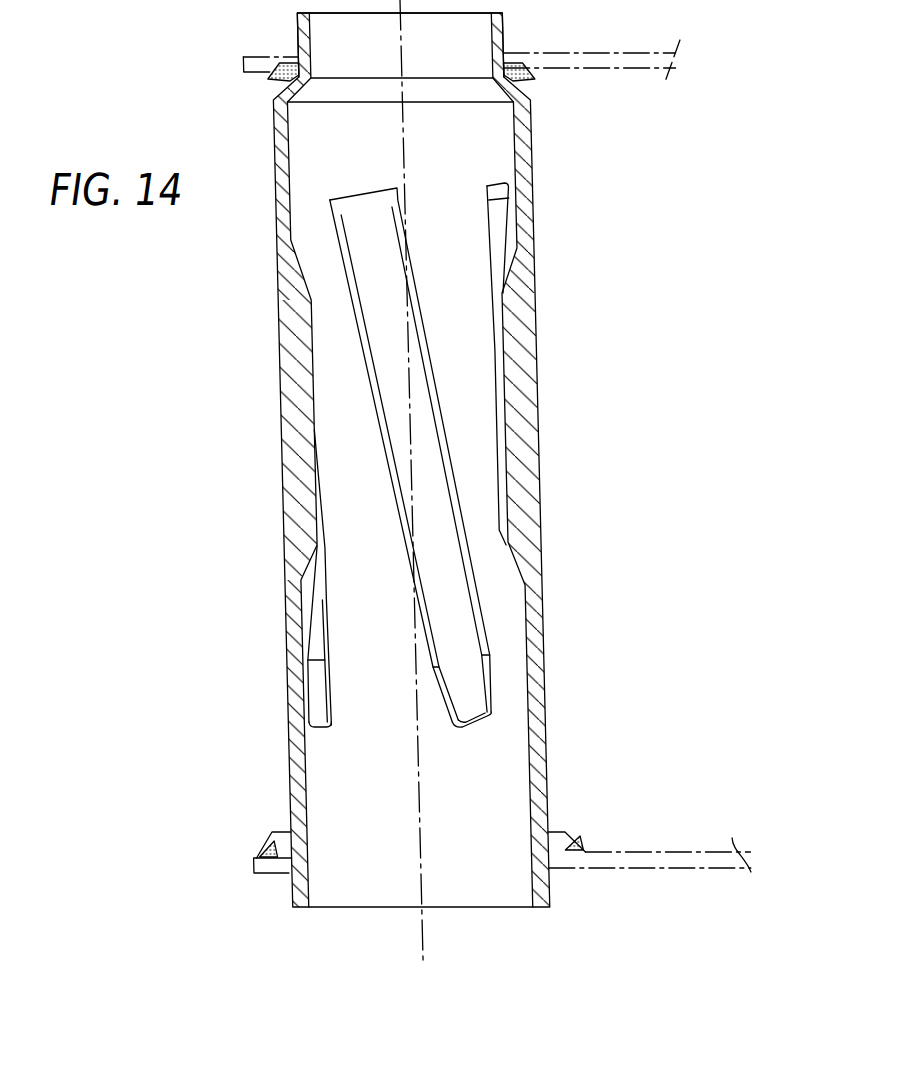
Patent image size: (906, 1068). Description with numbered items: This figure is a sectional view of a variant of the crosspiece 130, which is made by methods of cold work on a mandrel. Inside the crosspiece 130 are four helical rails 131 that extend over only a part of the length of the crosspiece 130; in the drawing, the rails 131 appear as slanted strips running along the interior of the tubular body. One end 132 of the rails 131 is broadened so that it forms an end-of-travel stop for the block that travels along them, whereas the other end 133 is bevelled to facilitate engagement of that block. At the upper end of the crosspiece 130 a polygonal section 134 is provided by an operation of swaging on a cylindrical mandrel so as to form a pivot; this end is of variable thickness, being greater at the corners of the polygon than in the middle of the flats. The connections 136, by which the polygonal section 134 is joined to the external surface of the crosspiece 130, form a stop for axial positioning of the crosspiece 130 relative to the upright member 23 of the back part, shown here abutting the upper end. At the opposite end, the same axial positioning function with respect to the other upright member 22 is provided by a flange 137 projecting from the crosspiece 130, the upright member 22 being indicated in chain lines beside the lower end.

The crosspiece 130 is at (535, 304).
The helical rails 131 is at (487, 255).
The end of the rails 132 is at (395, 197).
The other end of the rails 133 is at (433, 724).
The polygonal section 134 is at (297, 33).
The connections 136 is at (266, 84).
The flange 137 is at (557, 812).
The upright member 22 is at (616, 812).
The upright member 23 is at (605, 68).